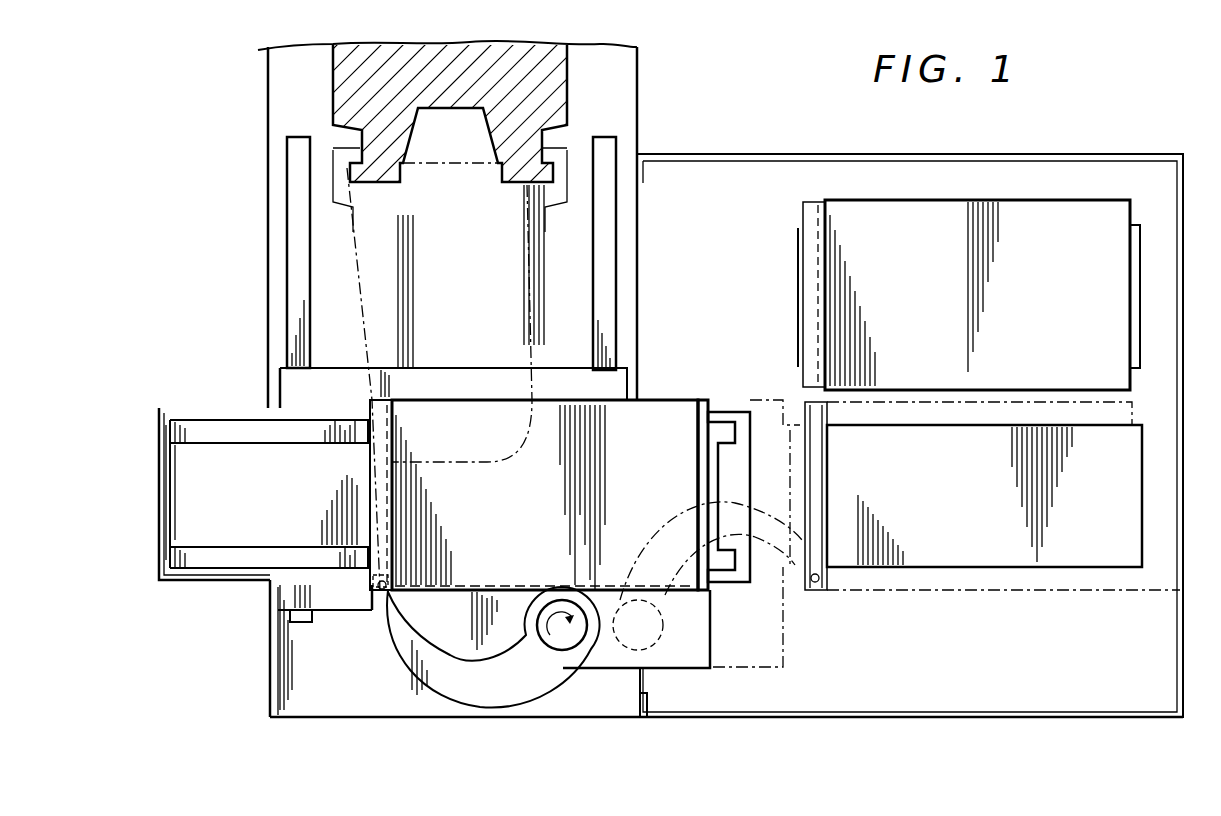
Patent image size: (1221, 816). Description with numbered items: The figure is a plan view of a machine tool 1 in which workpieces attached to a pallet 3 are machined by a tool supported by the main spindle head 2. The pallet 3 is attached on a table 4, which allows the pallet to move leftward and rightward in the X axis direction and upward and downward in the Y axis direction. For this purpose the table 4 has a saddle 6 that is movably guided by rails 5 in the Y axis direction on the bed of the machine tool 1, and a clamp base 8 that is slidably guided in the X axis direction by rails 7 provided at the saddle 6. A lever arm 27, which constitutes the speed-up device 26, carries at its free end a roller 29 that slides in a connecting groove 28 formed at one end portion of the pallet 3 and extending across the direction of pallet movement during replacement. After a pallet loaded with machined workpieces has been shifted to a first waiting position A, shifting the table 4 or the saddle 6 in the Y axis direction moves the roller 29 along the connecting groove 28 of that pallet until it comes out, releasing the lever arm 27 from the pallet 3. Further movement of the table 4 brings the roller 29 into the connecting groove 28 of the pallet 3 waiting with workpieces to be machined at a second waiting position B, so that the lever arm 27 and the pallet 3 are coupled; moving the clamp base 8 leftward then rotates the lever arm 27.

The machine tool 1 is at (618, 92).
The main spindle head 2 is at (537, 247).
The pallet 3 is at (663, 408).
The table 4 is at (243, 600).
The rails 5 is at (295, 258).
The saddle 6 is at (332, 380).
The rails 7 is at (206, 425).
The clamp base 8 is at (712, 405).
The speed-up device 26 is at (561, 688).
The lever arm 27 is at (476, 695).
The connecting groove 28 is at (372, 550).
The roller 29 is at (380, 598).
The first waiting position A is at (1150, 609).
The second waiting position B is at (1120, 188).